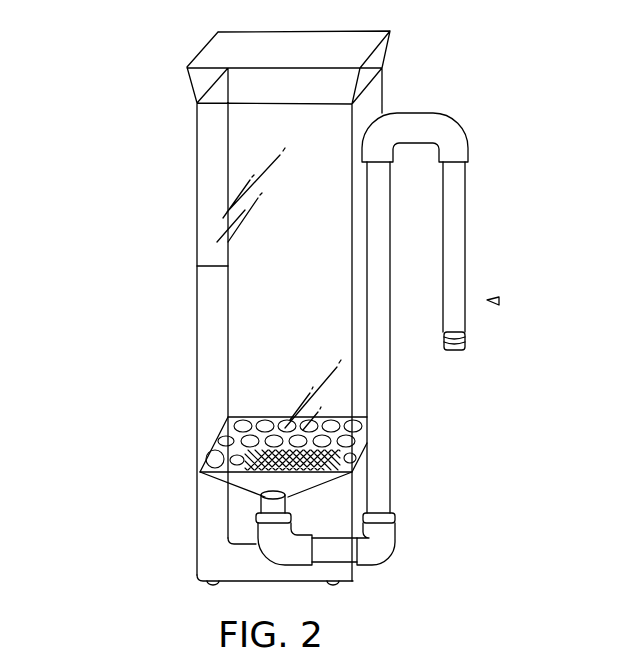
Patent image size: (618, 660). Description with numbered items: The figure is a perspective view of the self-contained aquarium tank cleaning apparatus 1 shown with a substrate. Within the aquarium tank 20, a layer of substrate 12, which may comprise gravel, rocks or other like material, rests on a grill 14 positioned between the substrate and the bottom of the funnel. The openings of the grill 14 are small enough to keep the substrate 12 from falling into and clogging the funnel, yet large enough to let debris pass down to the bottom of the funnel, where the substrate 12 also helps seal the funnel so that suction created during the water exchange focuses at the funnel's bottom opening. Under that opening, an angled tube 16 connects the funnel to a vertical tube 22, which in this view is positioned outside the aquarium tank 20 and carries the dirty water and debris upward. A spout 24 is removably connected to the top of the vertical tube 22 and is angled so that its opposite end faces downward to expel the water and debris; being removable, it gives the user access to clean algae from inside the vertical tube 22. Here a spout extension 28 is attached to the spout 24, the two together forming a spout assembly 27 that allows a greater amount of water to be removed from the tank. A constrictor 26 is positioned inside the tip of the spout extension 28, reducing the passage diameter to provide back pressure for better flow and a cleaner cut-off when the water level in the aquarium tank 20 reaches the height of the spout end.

The self-contained aquarium tank cleaning apparatus 1 is at (88, 135).
The substrate 12 is at (212, 437).
The grill 14 is at (230, 495).
The angled tube 16 is at (330, 558).
The aquarium tank 20 is at (197, 267).
The vertical tube 22 is at (390, 431).
The spout 24 is at (468, 143).
The constrictor 26 is at (465, 345).
The spout assembly 27 is at (498, 302).
The spout extension 28 is at (455, 232).